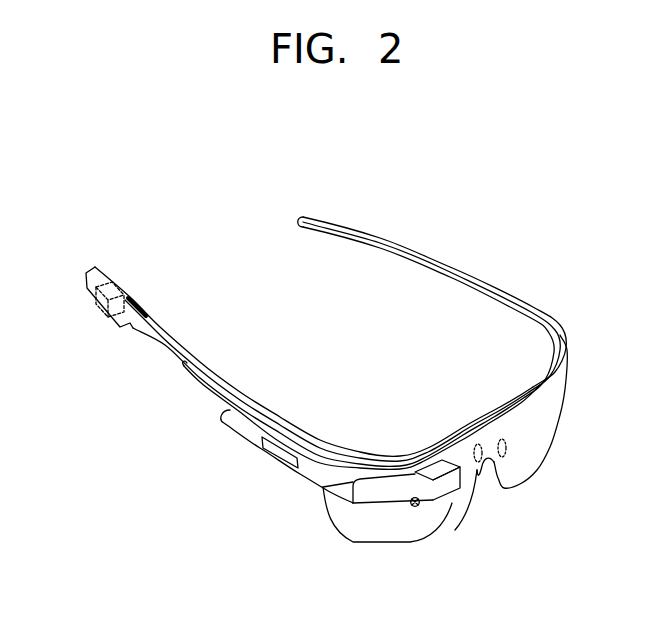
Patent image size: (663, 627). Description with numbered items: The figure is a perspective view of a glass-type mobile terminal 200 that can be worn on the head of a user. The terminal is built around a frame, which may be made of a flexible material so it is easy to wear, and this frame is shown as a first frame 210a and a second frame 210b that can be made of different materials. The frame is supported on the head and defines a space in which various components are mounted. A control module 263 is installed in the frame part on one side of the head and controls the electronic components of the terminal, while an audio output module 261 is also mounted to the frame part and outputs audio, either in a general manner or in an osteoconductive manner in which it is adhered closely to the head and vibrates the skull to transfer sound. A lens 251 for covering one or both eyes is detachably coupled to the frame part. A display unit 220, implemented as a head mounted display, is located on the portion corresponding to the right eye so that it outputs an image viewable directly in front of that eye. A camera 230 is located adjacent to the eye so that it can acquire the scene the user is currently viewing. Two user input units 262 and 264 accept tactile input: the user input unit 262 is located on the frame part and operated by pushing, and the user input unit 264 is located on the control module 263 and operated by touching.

The glass-type mobile terminal 200 is at (400, 188).
The first frame 210a is at (452, 268).
The second frame 210b is at (166, 338).
The display unit 220 is at (445, 485).
The camera 230 is at (420, 507).
The lens 251 is at (543, 427).
The audio output module 261 is at (98, 308).
The user input unit 262 is at (138, 300).
The control module 263 is at (233, 422).
The user input unit 264 is at (277, 456).